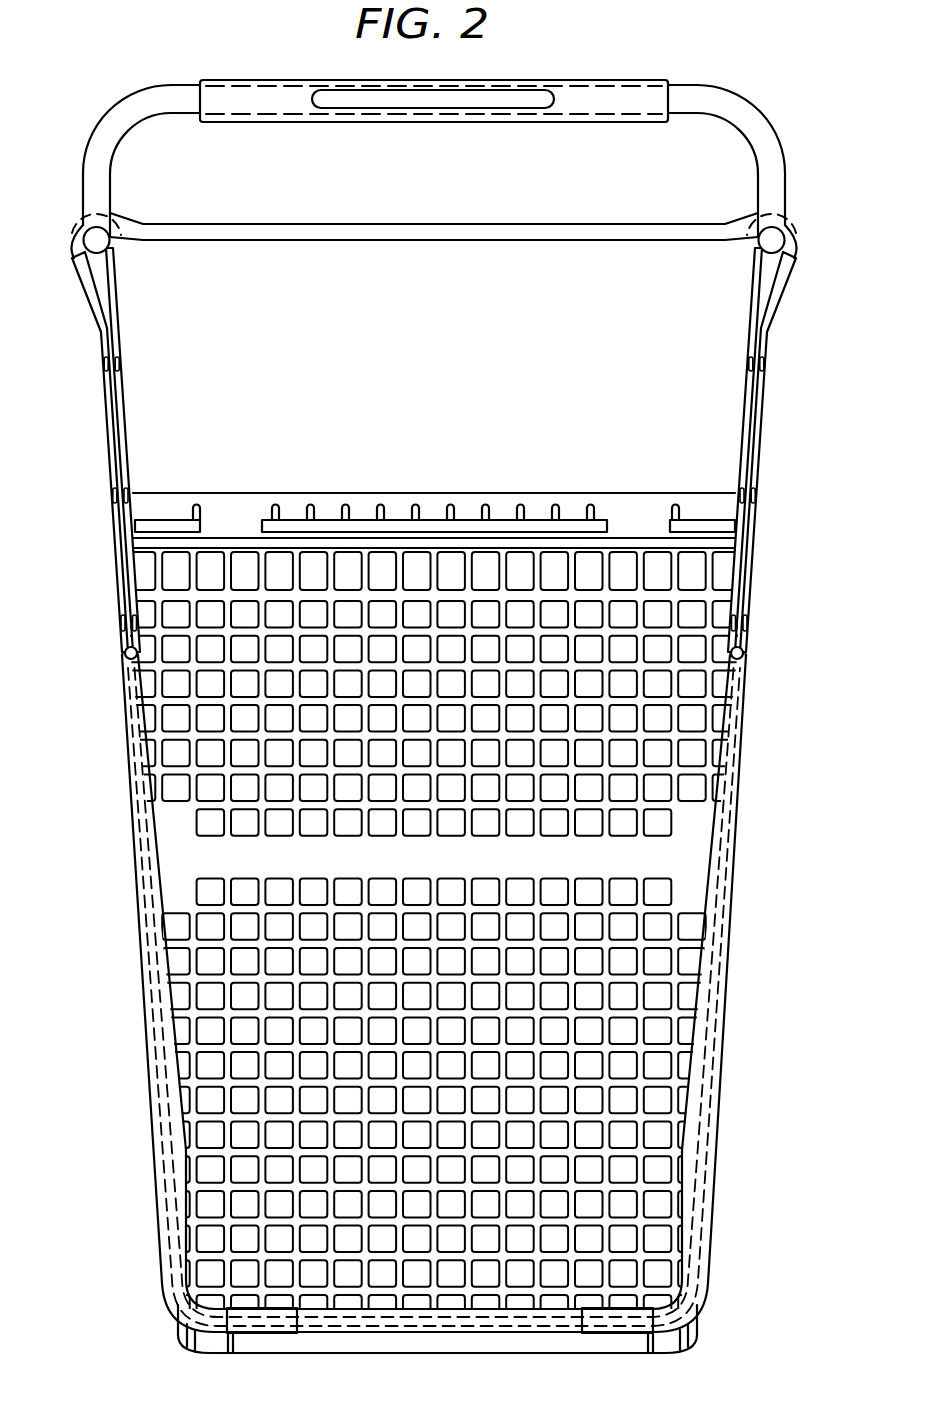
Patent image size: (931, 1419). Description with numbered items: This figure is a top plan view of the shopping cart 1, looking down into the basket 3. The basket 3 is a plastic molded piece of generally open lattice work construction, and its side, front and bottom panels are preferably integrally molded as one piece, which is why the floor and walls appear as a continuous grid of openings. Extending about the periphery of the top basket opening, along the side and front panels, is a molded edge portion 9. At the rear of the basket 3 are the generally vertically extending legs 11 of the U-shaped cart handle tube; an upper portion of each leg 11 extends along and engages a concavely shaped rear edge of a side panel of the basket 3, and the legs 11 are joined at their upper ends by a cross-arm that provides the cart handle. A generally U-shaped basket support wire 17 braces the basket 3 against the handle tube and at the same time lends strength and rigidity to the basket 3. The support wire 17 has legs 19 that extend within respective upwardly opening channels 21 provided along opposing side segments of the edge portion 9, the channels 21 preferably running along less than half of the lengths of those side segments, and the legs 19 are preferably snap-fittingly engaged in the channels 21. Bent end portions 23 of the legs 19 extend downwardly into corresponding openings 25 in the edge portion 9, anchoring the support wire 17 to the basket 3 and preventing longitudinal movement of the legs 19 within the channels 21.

The cart 1 is at (158, 1334).
The basket 3 is at (447, 871).
The molded edge portion 9 is at (745, 770).
The legs 11 is at (93, 237).
The basket support wire 17 is at (558, 243).
The legs 19 is at (102, 305).
The channels 21 is at (132, 440).
The bent end portions 23 is at (125, 652).
The openings 25 is at (128, 667).